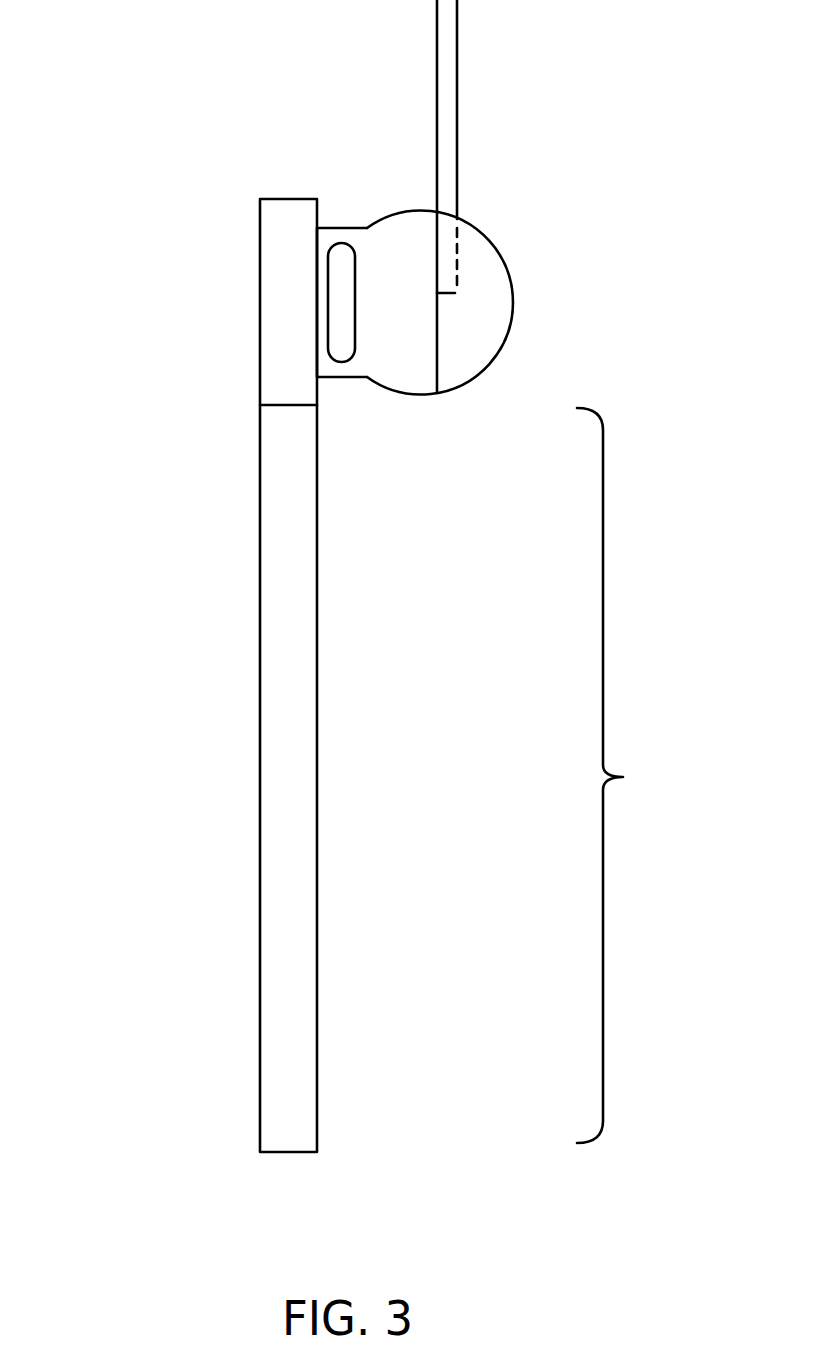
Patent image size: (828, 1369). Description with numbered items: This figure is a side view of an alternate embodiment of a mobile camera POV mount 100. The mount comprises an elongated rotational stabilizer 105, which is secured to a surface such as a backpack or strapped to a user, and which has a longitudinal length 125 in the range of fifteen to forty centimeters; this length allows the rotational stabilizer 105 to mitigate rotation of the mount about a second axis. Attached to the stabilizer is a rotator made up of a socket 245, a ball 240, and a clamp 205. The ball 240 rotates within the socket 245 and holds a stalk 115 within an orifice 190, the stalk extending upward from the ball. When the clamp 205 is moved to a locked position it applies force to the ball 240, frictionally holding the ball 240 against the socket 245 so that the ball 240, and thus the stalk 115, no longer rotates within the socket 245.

The mobile camera POV mount 100 is at (130, 77).
The rotational stabilizer 105 is at (260, 630).
The stalk 115 is at (457, 95).
The orifice 190 is at (447, 248).
The clamp 205 is at (328, 303).
The ball 240 is at (508, 335).
The socket 245 is at (398, 395).
The longitudinal length 125 is at (623, 775).